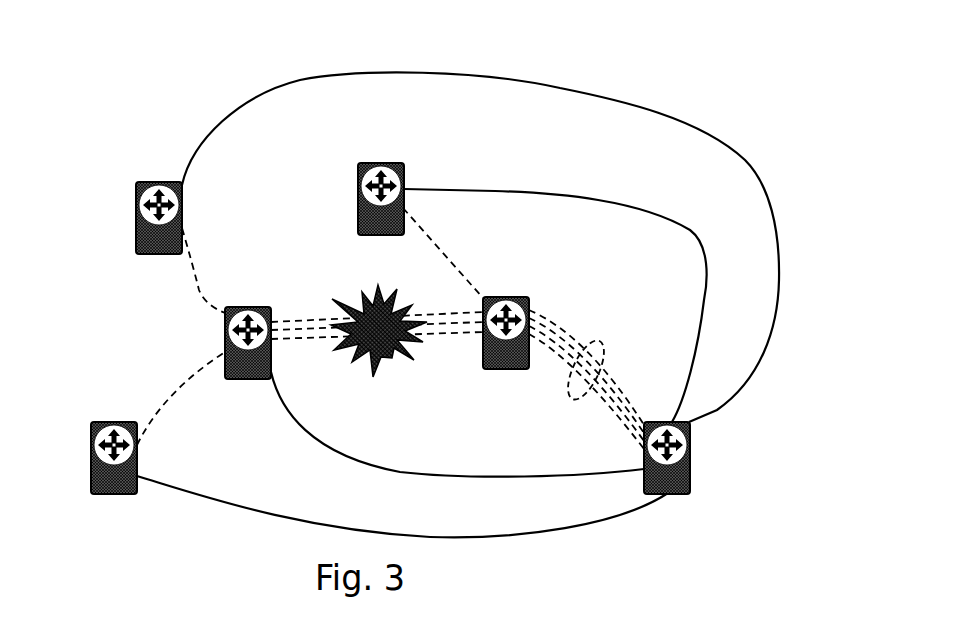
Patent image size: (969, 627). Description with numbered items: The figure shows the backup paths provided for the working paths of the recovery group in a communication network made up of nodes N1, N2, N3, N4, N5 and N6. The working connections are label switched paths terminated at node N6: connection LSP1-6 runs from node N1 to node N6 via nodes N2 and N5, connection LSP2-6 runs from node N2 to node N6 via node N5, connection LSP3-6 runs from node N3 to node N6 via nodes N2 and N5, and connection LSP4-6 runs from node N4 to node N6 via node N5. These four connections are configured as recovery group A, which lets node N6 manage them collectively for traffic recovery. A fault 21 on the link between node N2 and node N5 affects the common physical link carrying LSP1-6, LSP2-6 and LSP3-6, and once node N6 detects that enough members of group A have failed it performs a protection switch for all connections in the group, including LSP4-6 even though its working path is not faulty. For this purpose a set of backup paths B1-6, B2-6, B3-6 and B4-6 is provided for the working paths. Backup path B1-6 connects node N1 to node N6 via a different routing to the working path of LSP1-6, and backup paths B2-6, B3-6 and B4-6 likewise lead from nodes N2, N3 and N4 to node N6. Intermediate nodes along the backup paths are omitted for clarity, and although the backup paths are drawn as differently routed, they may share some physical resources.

The node N1 is at (114, 481).
The node N2 is at (248, 363).
The node N3 is at (159, 197).
The node N4 is at (381, 179).
The node N5 is at (506, 314).
The node N6 is at (698, 458).
The connection LSP1-6 is at (172, 397).
The connection LSP2-6 is at (297, 332).
The connection LSP3-6 is at (198, 290).
The connection LSP4-6 is at (436, 242).
The backup path B1-6 is at (213, 500).
The backup path B2-6 is at (395, 467).
The backup path B3-6 is at (658, 105).
The backup path B4-6 is at (495, 188).
The recovery group A is at (605, 339).
The fault 21 is at (340, 300).